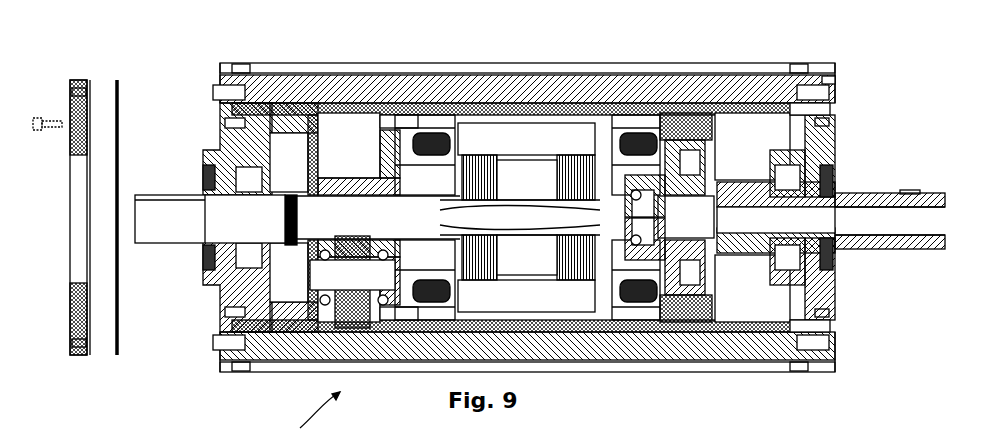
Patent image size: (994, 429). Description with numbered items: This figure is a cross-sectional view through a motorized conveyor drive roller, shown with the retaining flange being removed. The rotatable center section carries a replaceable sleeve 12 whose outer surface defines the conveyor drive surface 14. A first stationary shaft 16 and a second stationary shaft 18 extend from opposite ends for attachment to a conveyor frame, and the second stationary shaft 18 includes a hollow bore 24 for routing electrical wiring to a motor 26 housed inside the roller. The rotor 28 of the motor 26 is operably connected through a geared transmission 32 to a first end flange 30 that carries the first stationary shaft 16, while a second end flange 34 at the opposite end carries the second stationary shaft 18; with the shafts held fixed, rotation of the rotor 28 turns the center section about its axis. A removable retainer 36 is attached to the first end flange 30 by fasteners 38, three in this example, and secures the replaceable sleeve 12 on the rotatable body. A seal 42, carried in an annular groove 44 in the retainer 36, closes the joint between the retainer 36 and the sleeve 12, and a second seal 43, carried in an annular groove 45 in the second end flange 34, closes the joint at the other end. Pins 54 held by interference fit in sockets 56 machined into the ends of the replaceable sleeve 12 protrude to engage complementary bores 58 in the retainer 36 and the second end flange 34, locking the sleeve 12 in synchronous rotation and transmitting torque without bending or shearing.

The replaceable sleeve 12 is at (700, 348).
The conveyor drive surface 14 is at (535, 73).
The first stationary shaft 16 is at (165, 195).
The second stationary shaft 18 is at (932, 190).
The hollow bore 24 is at (860, 228).
The motor 26 is at (522, 268).
The rotor 28 is at (355, 212).
The first end flange 30 is at (232, 312).
The geared transmission 32 is at (350, 277).
The second end flange 34 is at (825, 150).
The retainer 36 is at (80, 80).
The fastener 38 is at (34, 130).
The seal 42 is at (120, 92).
The second seal 43 is at (832, 83).
The annular groove 44 is at (96, 80).
The annular groove 45 is at (838, 428).
The pin 54 is at (215, 92).
The socket 56 is at (240, 72).
The bore 58 is at (84, 92).